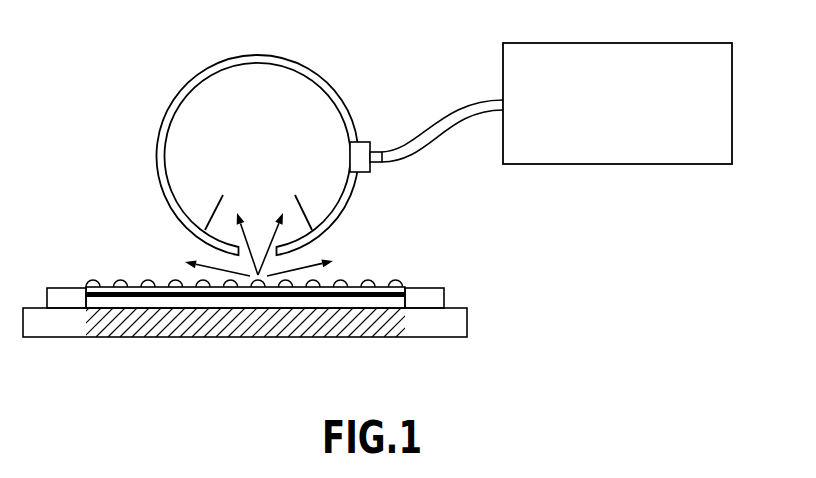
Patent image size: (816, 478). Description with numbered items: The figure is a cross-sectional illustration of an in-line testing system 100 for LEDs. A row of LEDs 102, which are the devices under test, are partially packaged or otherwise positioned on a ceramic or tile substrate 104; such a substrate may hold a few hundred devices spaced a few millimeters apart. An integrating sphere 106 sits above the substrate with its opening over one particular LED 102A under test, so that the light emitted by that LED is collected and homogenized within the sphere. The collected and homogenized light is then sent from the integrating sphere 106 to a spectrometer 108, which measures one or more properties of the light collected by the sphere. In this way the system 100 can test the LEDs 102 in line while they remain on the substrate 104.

The in-line testing system 100 is at (150, 64).
The LEDs 102 is at (117, 281).
The LED under test 102A is at (257, 287).
The substrate 104 is at (455, 292).
The integrating sphere 106 is at (308, 64).
The spectrometer 108 is at (617, 43).